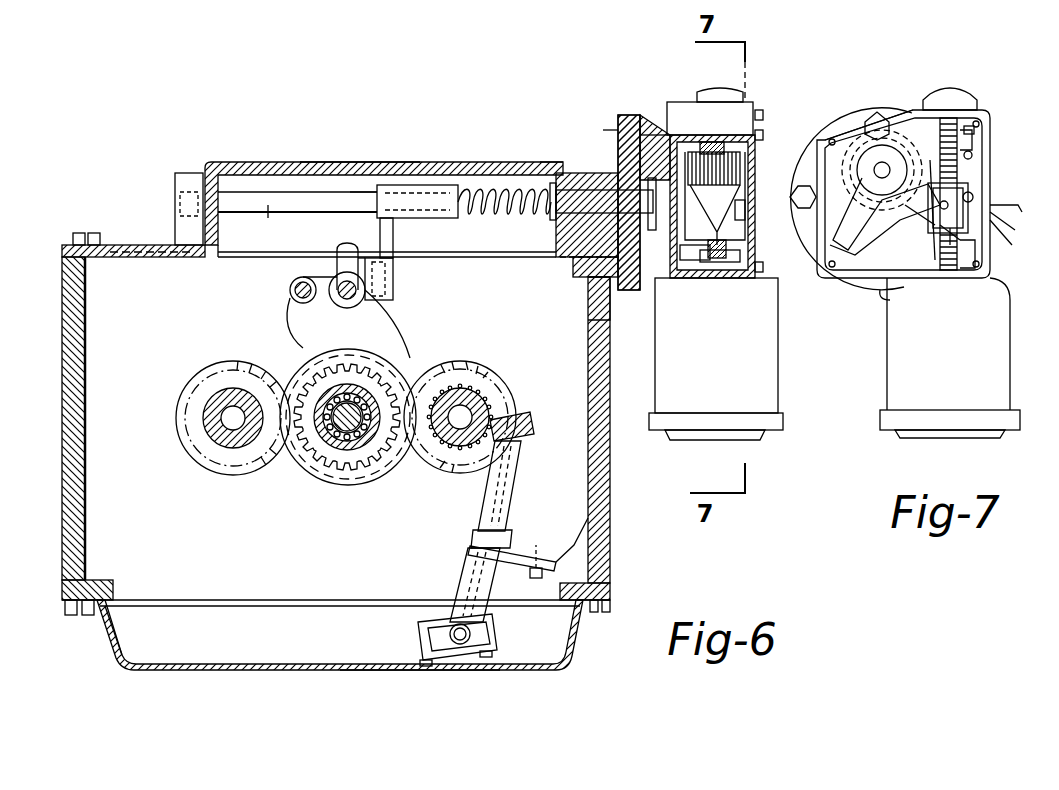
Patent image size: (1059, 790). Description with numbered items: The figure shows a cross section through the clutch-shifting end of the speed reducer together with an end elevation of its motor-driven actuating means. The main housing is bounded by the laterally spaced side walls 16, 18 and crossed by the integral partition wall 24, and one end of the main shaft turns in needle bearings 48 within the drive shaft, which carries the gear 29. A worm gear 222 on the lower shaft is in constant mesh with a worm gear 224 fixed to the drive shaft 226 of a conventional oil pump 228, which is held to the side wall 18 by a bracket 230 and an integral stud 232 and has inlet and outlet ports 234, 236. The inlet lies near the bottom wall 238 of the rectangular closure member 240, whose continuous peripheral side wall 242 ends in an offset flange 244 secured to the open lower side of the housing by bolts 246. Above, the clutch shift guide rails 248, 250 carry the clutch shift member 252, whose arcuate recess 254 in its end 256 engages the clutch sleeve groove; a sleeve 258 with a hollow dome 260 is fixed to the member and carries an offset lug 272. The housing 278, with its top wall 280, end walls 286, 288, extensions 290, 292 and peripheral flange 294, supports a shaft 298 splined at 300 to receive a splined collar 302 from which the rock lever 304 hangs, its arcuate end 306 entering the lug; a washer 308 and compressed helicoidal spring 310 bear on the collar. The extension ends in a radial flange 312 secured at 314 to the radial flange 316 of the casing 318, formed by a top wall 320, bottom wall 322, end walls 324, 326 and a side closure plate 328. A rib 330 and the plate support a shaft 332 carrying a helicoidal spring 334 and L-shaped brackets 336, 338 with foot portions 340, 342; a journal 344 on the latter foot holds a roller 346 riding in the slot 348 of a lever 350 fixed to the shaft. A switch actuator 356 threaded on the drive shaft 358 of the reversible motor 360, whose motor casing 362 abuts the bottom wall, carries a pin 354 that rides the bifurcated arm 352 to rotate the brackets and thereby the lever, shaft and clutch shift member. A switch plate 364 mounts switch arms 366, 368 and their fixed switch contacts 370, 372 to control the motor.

In FIG. 6, the side wall 16 is at (62, 372).
In FIG. 6, the side wall 18 is at (612, 487).
In FIG. 6, the partition wall 24 is at (177, 545).
In FIG. 6, the drive gear 29 is at (380, 450).
In FIG. 6, the needle bearings 48 is at (342, 450).
In FIG. 6, the worm gear 222 is at (480, 412).
In FIG. 6, the worm gear 224 is at (532, 424).
In FIG. 6, the drive shaft 226 is at (505, 493).
In FIG. 6, the oil pump 228 is at (453, 566).
In FIG. 6, the bracket 230 is at (520, 585).
In FIG. 6, the stud 232 is at (568, 523).
In FIG. 6, the inlet port 234 is at (484, 520).
In FIG. 6, the outlet port 236 is at (430, 622).
In FIG. 6, the bottom wall 238 is at (275, 664).
In FIG. 6, the closure member 240 is at (366, 672).
In FIG. 6, the peripheral side wall 242 is at (122, 640).
In FIG. 6, the flange 244 is at (68, 614).
In FIG. 6, the bolts 246 is at (88, 616).
In FIG. 6, the clutch shift guide rail 248 is at (290, 292).
In FIG. 6, the clutch shift guide rail 250 is at (340, 300).
In FIG. 6, the clutch shift member 252 is at (395, 320).
In FIG. 6, the arcuate recess 254 is at (415, 350).
In FIG. 6, the end 256 is at (300, 360).
In FIG. 6, the sleeve 258 is at (310, 280).
In FIG. 6, the hollow dome 260 is at (345, 245).
In FIG. 6, the offset lug 272 is at (362, 252).
In FIG. 6, the housing 278 is at (359, 159).
In FIG. 6, the top wall 280 is at (257, 162).
In FIG. 6, the end wall 286 is at (228, 252).
In FIG. 6, the end wall 288 is at (560, 238).
In FIG. 6, the extension 290 is at (186, 173).
In FIG. 6, the extension 292 is at (600, 175).
In FIG. 6, the peripheral flange 294 is at (140, 258).
In FIG. 6, the shaft 298 is at (273, 213).
In FIG. 6, the splines 300 is at (368, 190).
In FIG. 6, the splined collar 302 is at (447, 220).
In FIG. 6, the rock lever 304 is at (393, 245).
In FIG. 6, the arcuate end 306 is at (393, 282).
In FIG. 6, the washer 308 is at (548, 162).
In FIG. 6, the helicoidal spring 310 is at (510, 185).
In FIG. 6, the radial flange 312 is at (600, 125).
In FIG. 6, the fastening 314 is at (645, 120).
In FIG. 7, the fastening 314 is at (880, 118).
In FIG. 7, the radial flange 316 is at (845, 128).
In FIG. 7, the casing 318 is at (1001, 160).
In FIG. 6, the top wall 320 is at (720, 140).
In FIG. 7, the top wall 320 is at (855, 125).
In FIG. 6, the bottom wall 322 is at (710, 280).
In FIG. 7, the bottom wall 322 is at (948, 290).
In FIG. 7, the end wall 324 is at (808, 262).
In FIG. 7, the end wall 326 is at (968, 192).
In FIG. 6, the side closure plate 328 is at (755, 240).
In FIG. 6, the rib 330 is at (655, 130).
In FIG. 7, the rib 330 is at (884, 192).
In FIG. 6, the shaft 332 is at (655, 150).
In FIG. 7, the shaft 332 is at (874, 170).
In FIG. 6, the helicoidal spring 334 is at (763, 130).
In FIG. 6, the L-shaped bracket 336 is at (745, 170).
In FIG. 6, the L-shaped bracket 338 is at (640, 212).
In FIG. 6, the foot portion 340 is at (748, 200).
In FIG. 6, the foot portion 342 is at (685, 262).
In FIG. 6, the journal 344 is at (695, 262).
In FIG. 6, the roller 346 is at (595, 265).
In FIG. 6, the slot 348 is at (655, 224).
In FIG. 7, the slot 348 is at (935, 228).
In FIG. 6, the lever 350 is at (625, 297).
In FIG. 7, the bifurcated arm 352 is at (905, 212).
In FIG. 7, the pin 354 is at (946, 235).
In FIG. 7, the switch actuator 356 is at (968, 185).
In FIG. 7, the drive shaft 358 is at (985, 268).
In FIG. 7, the reversible motor 360 is at (1025, 315).
In FIG. 6, the motor casing 362 is at (778, 370).
In FIG. 7, the switch plate 364 is at (972, 150).
In FIG. 6, the switch arm 366 is at (755, 180).
In FIG. 7, the switch arm 366 is at (965, 130).
In FIG. 7, the switch arm 368 is at (995, 240).
In FIG. 7, the fixed switch contact 370 is at (975, 138).
In FIG. 7, the fixed switch contact 372 is at (973, 197).